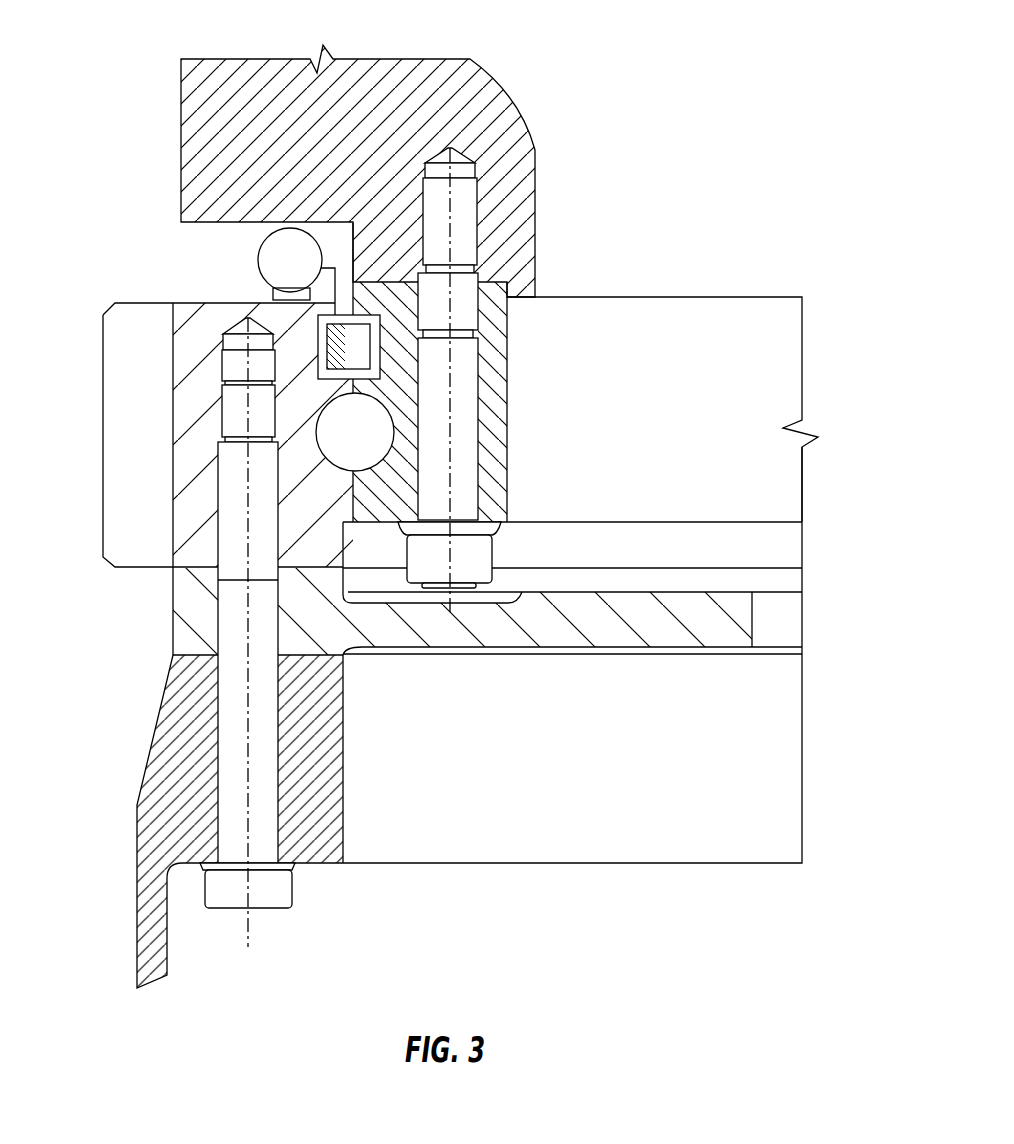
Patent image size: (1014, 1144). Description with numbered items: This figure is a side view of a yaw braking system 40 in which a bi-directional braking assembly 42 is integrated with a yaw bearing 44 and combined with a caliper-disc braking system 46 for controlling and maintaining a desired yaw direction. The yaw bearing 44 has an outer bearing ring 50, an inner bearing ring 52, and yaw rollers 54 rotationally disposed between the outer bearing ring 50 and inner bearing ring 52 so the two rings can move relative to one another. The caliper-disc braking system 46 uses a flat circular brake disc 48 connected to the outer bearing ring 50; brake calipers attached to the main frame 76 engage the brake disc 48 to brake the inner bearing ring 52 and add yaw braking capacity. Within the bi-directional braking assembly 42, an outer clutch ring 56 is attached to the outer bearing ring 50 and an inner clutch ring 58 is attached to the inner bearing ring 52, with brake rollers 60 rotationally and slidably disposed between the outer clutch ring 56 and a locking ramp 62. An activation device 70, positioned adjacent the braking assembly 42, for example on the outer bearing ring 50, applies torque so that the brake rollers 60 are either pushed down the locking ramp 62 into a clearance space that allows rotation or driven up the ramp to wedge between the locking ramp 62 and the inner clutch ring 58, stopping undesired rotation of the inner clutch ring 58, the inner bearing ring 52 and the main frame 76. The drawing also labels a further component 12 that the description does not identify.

The lower housing block 12 is at (157, 820).
The yaw braking system 40 is at (705, 93).
The bi-directional braking assembly 42 is at (575, 255).
The yaw bearing 44 is at (514, 360).
The caliper-disc braking system 46 is at (703, 695).
The brake disc 48 is at (514, 626).
The outer bearing ring 50 is at (190, 350).
The inner bearing ring 52 is at (492, 407).
The yaw rollers 54 is at (342, 448).
The outer clutch ring 56 is at (318, 328).
The inner clutch ring 58 is at (393, 290).
The brake rollers 60 is at (347, 359).
The locking ramp 62 is at (333, 348).
The activation device 70 is at (277, 272).
The main frame 76 is at (210, 164).